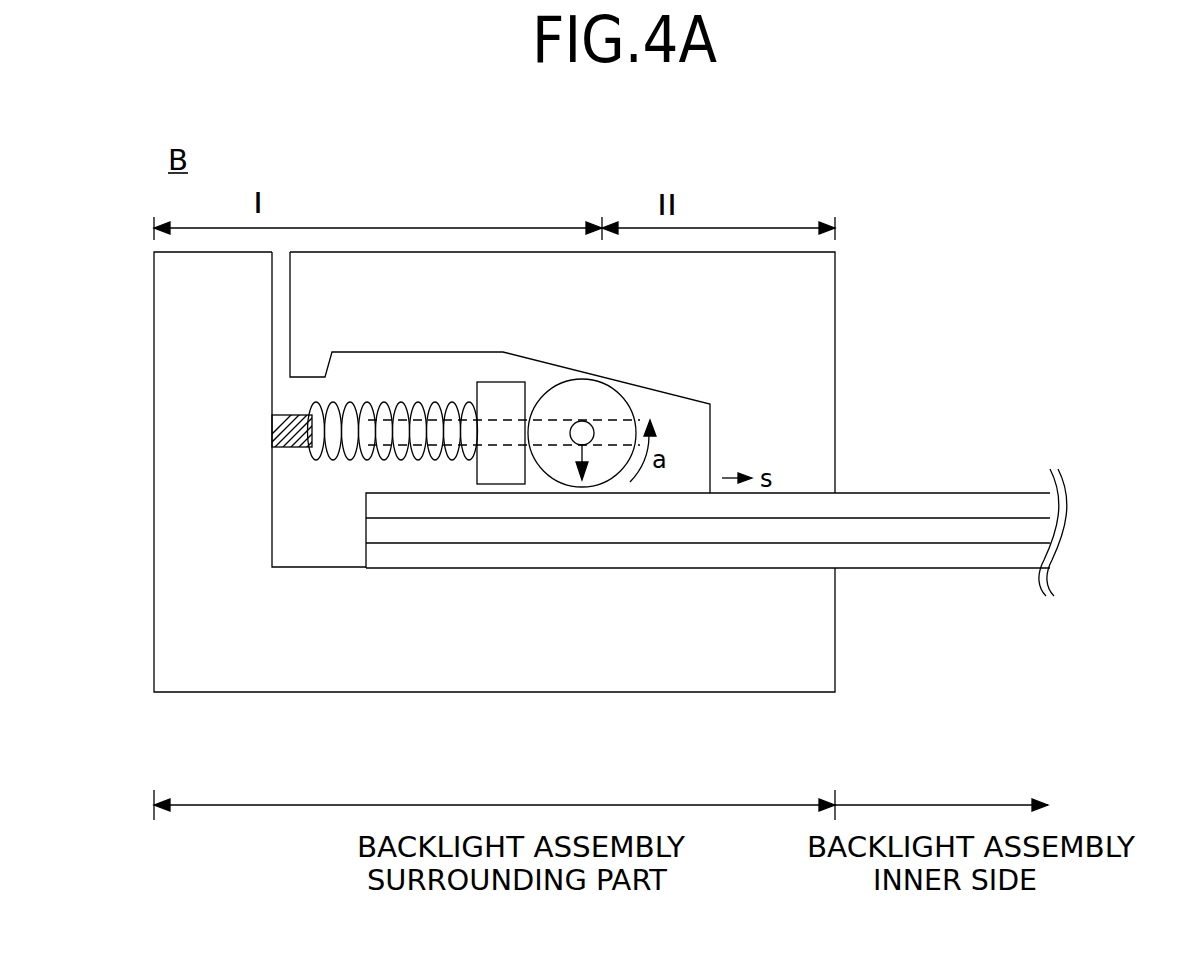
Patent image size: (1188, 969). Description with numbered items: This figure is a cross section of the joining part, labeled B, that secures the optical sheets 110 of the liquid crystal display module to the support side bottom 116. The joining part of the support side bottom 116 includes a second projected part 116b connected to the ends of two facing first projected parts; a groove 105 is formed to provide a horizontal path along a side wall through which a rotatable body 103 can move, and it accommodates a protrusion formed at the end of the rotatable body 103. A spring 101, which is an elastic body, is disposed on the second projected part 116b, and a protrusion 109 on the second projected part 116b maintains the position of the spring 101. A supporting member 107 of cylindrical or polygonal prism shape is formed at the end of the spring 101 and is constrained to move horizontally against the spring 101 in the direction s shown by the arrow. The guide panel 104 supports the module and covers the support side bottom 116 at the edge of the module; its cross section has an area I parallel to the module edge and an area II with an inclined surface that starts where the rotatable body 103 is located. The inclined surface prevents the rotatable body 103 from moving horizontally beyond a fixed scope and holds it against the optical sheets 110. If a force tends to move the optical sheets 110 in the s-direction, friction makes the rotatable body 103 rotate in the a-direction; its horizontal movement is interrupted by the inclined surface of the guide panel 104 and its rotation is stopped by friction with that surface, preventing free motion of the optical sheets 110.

The spring 101 is at (310, 410).
The rotatable body 103 is at (588, 392).
The guide panel 104 is at (822, 298).
The groove 105 is at (502, 433).
The supporting member 107 is at (517, 397).
The protrusion 109 is at (275, 435).
The optical sheets 110 is at (966, 560).
The support side bottom 116 is at (480, 682).
The second projected part 116b is at (213, 313).